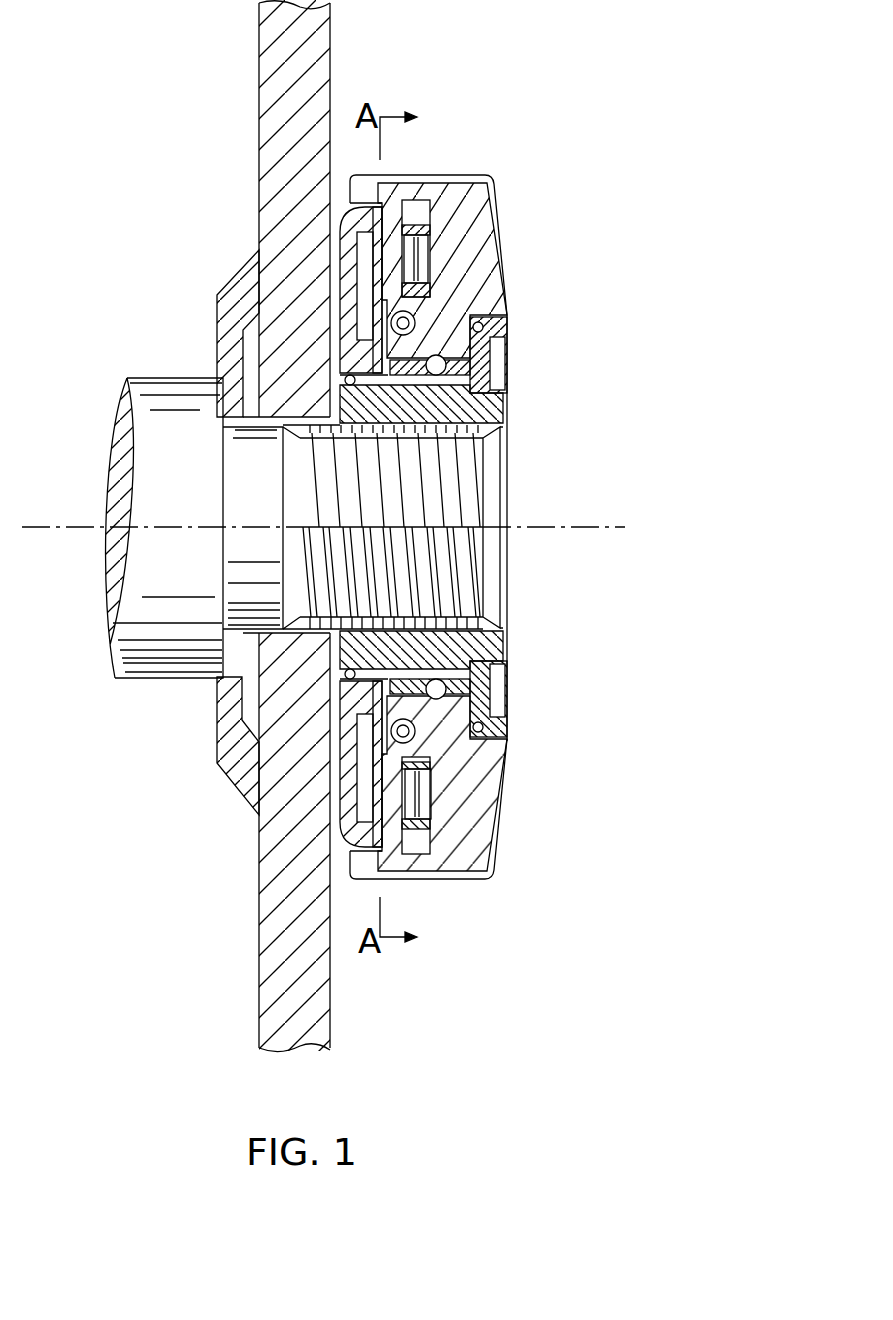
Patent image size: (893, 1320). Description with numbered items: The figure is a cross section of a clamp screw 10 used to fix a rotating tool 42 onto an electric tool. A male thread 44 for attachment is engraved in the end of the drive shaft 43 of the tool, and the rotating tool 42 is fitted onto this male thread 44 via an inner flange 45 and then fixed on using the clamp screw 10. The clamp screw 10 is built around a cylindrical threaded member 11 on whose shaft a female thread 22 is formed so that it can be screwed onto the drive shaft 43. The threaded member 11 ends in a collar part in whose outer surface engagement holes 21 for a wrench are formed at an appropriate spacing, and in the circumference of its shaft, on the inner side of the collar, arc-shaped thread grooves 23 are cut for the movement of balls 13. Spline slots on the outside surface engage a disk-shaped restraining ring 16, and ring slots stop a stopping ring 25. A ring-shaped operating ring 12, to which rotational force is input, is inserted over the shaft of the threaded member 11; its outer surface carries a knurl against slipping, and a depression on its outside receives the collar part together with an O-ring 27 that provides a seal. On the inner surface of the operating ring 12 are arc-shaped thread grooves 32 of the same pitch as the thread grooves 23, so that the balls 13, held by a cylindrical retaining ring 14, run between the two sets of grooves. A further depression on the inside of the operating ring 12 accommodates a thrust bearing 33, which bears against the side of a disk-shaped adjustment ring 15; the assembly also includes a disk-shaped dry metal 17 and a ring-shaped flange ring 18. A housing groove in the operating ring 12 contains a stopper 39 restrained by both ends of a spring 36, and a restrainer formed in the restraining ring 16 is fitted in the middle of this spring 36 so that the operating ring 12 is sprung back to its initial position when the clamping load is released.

The clamp screw 10 is at (522, 144).
The cylindrical threaded member 11 is at (488, 412).
The operating ring 12 is at (500, 224).
The balls 13 is at (441, 358).
The retaining ring 14 is at (500, 356).
The adjustment ring 15 is at (440, 240).
The restraining ring 16 is at (372, 283).
The dry metal 17 is at (357, 290).
The flange ring 18 is at (342, 302).
The engagement holes 21 is at (506, 697).
The female thread 22 is at (480, 622).
The thread grooves 23 is at (422, 690).
The stopping ring 25 is at (327, 700).
The O-ring 27 is at (506, 742).
The thread grooves 32 is at (417, 730).
The thrust bearing 33 is at (453, 179).
The spring 36 is at (432, 766).
The stopper 39 is at (330, 775).
The rotating tool 42 is at (270, 82).
The drive shaft 43 is at (138, 490).
The male thread 44 is at (481, 482).
The inner flange 45 is at (218, 334).